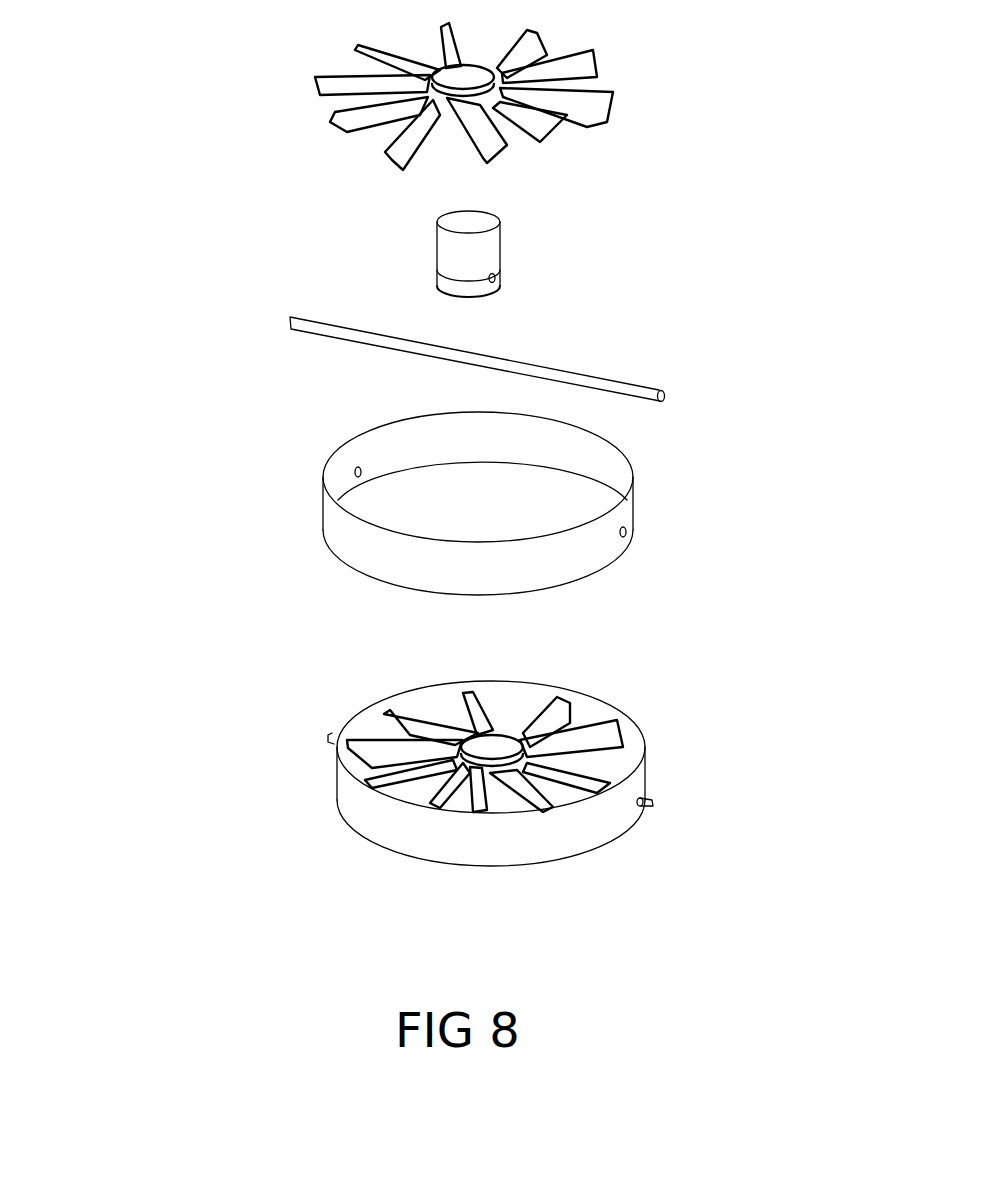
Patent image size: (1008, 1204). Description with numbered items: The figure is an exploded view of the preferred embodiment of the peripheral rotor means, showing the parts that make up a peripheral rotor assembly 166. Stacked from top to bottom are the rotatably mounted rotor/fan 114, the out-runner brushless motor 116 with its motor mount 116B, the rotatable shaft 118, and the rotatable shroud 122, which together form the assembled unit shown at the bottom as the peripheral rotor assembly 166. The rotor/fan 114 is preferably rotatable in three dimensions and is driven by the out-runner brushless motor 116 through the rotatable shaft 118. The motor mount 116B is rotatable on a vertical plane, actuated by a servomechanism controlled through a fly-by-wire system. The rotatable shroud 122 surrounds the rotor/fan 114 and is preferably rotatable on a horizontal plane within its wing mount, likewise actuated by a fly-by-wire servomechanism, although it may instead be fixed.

The rotor/fan 114 is at (573, 72).
The out-runner brushless motor 116 is at (480, 250).
The motor mount 116B is at (443, 277).
The rotatable shaft 118 is at (563, 377).
The rotatable shroud 122 is at (617, 517).
The peripheral rotor assembly 166 is at (300, 864).